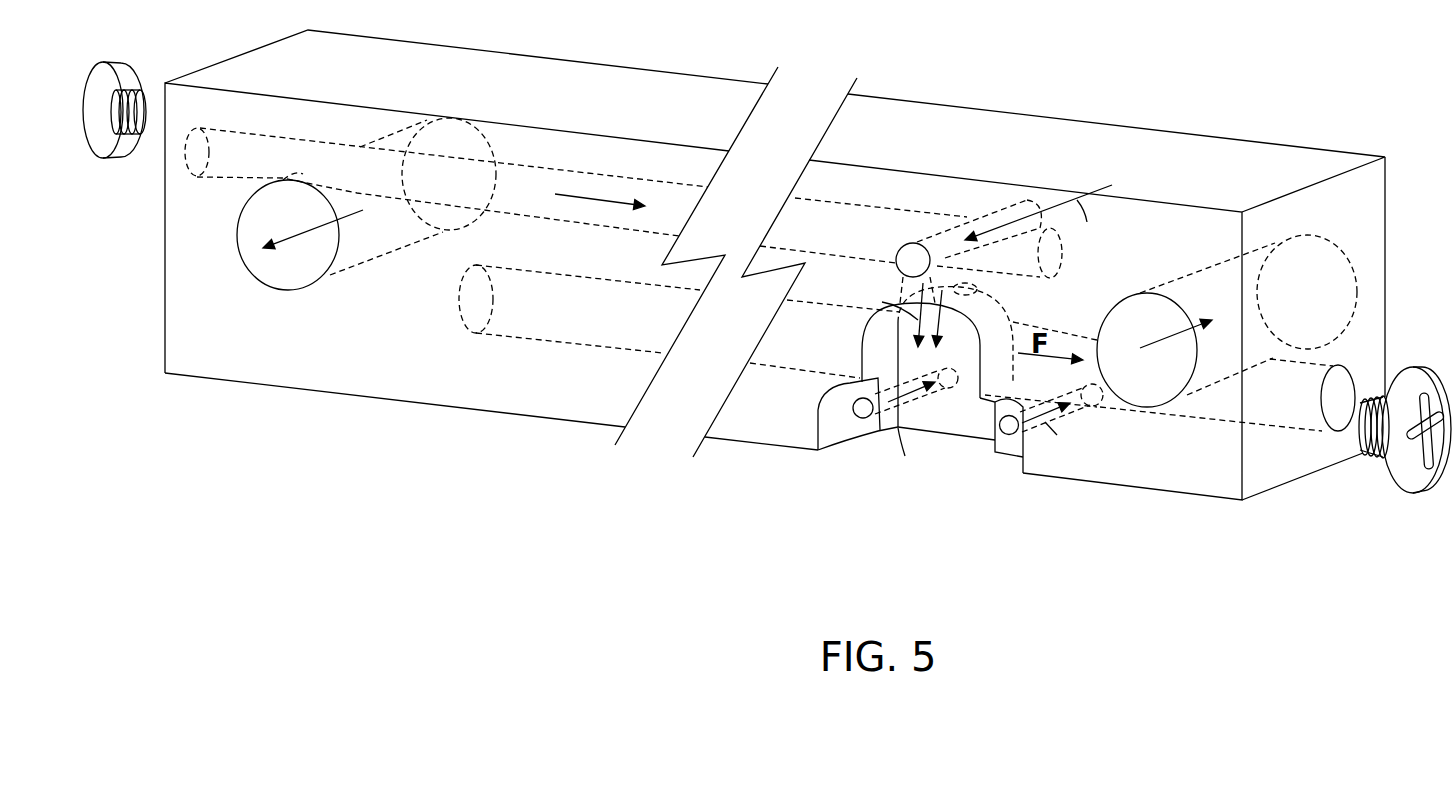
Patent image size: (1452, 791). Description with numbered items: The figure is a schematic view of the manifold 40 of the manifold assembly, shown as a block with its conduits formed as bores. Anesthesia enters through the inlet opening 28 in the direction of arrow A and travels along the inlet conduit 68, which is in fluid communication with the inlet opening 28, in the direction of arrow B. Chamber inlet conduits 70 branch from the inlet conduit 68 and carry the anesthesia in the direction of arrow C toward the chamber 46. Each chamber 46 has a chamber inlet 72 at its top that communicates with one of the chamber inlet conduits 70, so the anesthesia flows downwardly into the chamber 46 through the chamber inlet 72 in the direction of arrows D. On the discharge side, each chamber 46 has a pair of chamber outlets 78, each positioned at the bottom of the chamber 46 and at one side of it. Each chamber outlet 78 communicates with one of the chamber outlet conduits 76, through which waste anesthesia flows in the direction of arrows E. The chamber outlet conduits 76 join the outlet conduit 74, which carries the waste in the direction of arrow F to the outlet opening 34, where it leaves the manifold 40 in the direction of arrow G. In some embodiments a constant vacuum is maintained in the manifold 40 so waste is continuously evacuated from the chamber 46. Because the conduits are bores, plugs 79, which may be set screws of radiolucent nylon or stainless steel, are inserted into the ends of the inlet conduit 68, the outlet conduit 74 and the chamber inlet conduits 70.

The inlet opening 28 is at (288, 278).
The outlet opening 34 is at (1343, 267).
The manifold 40 is at (1123, 140).
The chamber 46 is at (973, 428).
The inlet conduit 68 is at (857, 215).
The chamber inlet conduit 70 is at (993, 215).
The chamber inlet 72 is at (983, 291).
The outlet conduit 74 is at (1270, 412).
The chamber outlet conduit 76 is at (933, 393).
The chamber outlet 78 is at (868, 418).
The plug 79 is at (118, 153).